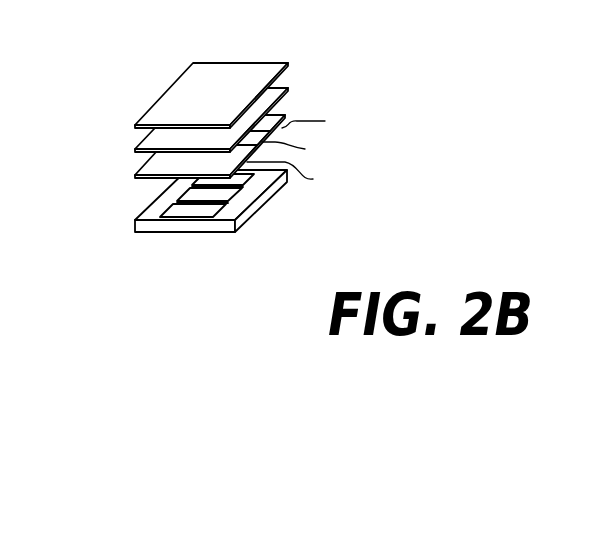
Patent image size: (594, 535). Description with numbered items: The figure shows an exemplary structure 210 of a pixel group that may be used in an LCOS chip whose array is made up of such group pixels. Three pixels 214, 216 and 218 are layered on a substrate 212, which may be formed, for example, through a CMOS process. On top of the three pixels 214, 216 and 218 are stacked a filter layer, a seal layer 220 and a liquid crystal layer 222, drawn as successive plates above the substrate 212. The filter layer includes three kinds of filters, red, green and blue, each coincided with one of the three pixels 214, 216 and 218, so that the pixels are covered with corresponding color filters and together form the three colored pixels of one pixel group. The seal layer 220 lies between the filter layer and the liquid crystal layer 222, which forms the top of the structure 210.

The structure of a pixel group 210 is at (249, 128).
The substrate 212 is at (136, 228).
The pixel 214 is at (242, 221).
The pixel 216 is at (168, 202).
The pixel / filter layer 218 is at (260, 174).
The seal layer 220 is at (156, 128).
The liquid crystal layer 222 is at (180, 78).